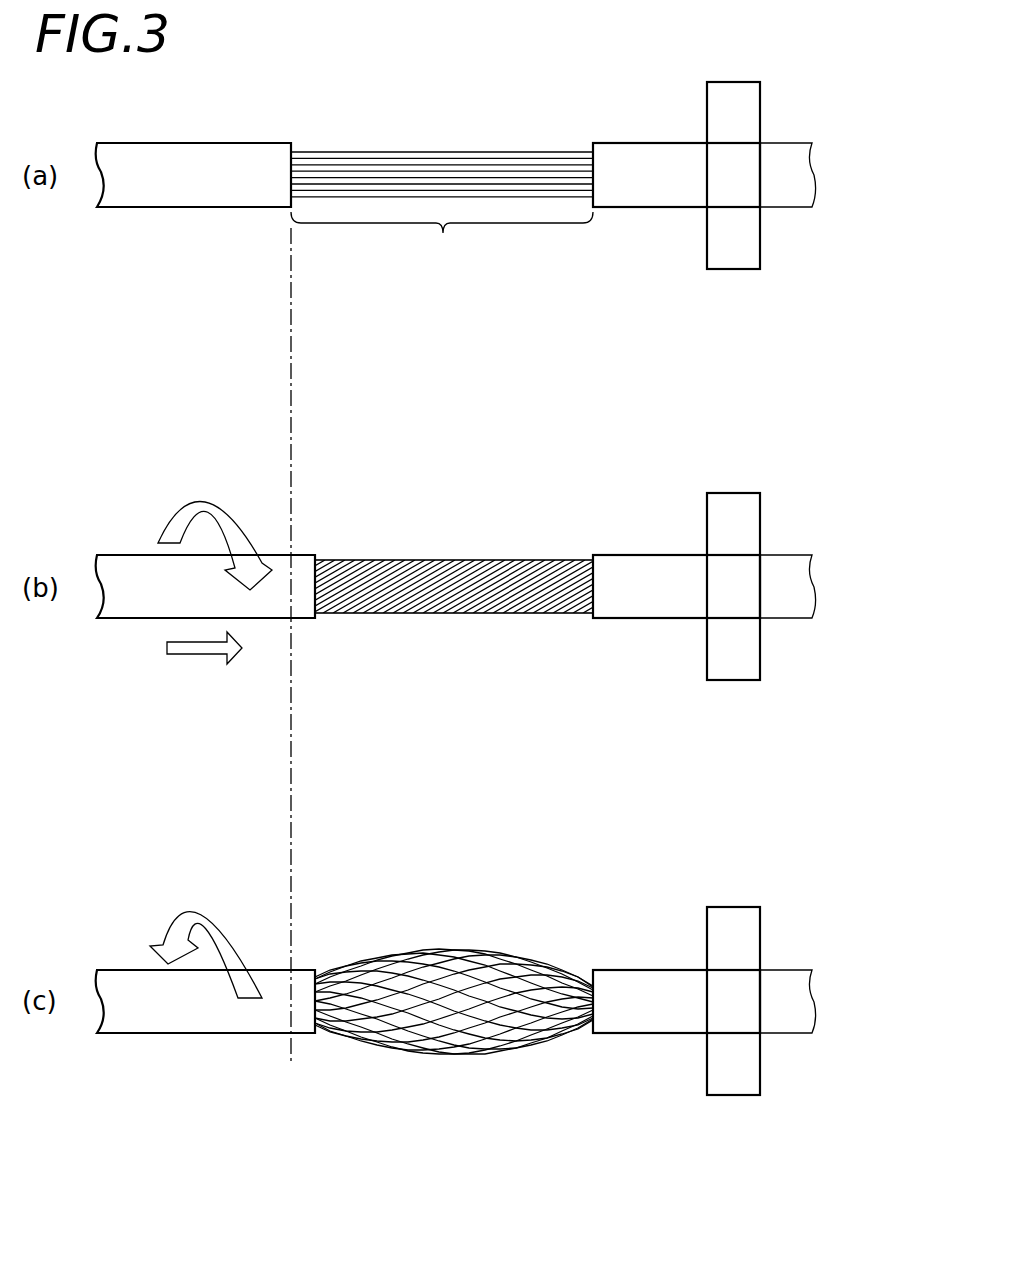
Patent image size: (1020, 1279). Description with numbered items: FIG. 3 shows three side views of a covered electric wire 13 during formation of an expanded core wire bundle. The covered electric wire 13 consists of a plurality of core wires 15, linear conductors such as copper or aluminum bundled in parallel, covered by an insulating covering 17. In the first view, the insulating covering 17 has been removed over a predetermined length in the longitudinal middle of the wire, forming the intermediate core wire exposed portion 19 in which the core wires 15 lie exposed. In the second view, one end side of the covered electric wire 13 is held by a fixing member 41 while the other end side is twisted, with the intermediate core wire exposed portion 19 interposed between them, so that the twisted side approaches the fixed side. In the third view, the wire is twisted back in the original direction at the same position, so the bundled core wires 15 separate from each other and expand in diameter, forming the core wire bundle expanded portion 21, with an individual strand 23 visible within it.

The covered electric wire 13 is at (778, 143).
The core wire 15 is at (477, 170).
The insulating covering 17 is at (216, 160).
The intermediate core wire exposed portion 19 is at (442, 237).
The core wire bundle expanded portion 21 is at (454, 1016).
The loosened strand 23 is at (458, 1003).
The fixing member 41 is at (732, 97).